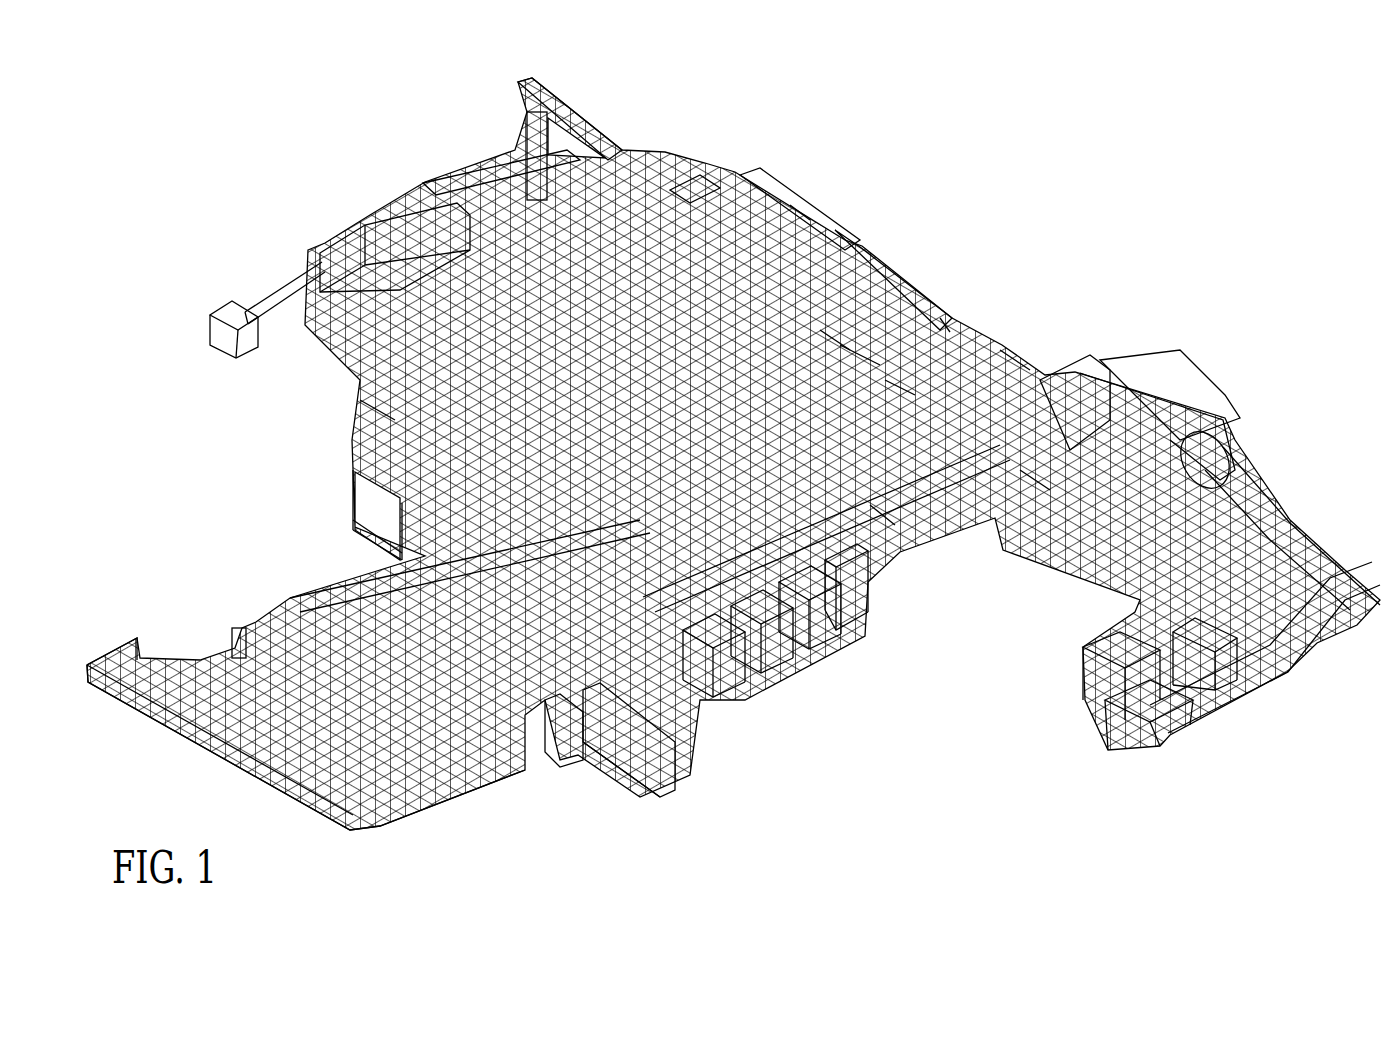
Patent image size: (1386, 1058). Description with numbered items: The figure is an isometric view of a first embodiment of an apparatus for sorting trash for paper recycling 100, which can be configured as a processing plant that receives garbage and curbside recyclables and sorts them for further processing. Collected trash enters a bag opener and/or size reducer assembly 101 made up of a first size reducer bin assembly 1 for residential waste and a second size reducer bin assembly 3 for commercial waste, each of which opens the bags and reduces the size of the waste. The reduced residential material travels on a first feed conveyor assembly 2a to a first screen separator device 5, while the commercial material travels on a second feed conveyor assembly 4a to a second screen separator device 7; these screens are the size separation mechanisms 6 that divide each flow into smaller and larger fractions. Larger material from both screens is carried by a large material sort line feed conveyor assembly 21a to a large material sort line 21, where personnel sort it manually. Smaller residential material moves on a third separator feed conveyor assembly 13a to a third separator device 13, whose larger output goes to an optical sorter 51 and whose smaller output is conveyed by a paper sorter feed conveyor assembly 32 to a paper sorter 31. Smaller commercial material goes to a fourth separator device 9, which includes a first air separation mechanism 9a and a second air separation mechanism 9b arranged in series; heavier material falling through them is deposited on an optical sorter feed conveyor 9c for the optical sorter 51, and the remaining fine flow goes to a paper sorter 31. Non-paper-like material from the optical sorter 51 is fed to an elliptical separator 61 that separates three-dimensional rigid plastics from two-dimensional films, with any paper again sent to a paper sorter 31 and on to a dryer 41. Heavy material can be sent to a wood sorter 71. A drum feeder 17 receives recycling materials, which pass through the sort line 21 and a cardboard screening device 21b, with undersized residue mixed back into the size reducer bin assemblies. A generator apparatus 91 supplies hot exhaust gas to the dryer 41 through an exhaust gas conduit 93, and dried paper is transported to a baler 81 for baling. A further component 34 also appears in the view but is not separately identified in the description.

The apparatus for sorting trash for paper recycling 100 is at (1120, 212).
The bag opener and/or size reducer assembly 101 is at (1060, 635).
The first size reducer bin assembly 1 is at (1078, 700).
The second size reducer bin assembly 3 is at (1135, 752).
The first feed conveyor assembly 2a is at (1277, 580).
The second feed conveyor assembly 4a is at (1275, 684).
The first screen separator device 5 is at (1100, 440).
The size separation mechanisms 6 is at (792, 188).
The second screen separator device 7 is at (1183, 415).
The fourth separator device 9 is at (932, 296).
The first air separation mechanism 9a is at (947, 307).
The second air separation mechanism 9b is at (797, 213).
The optical sorter feed conveyor 9c is at (830, 343).
The third separator device 13 is at (857, 353).
The third separator feed conveyor assembly 13a is at (900, 386).
The drum feeder 17 is at (686, 753).
The large material sort line 21 is at (864, 575).
The large material sort line feed conveyor assembly 21a is at (1020, 356).
The cardboard screening device 21b is at (887, 517).
The paper sorter 31 is at (560, 225).
The paper sorter feed conveyor assembly 32 is at (772, 677).
The chute 34 is at (1038, 498).
The dryer 41 is at (345, 240).
The optical sorter 51 is at (690, 253).
The elliptical separator 61 is at (372, 405).
The wood sorter 71 is at (237, 628).
The baler 81 is at (456, 718).
The generator apparatus 91 is at (218, 312).
The exhaust gas conduit 93 is at (282, 272).